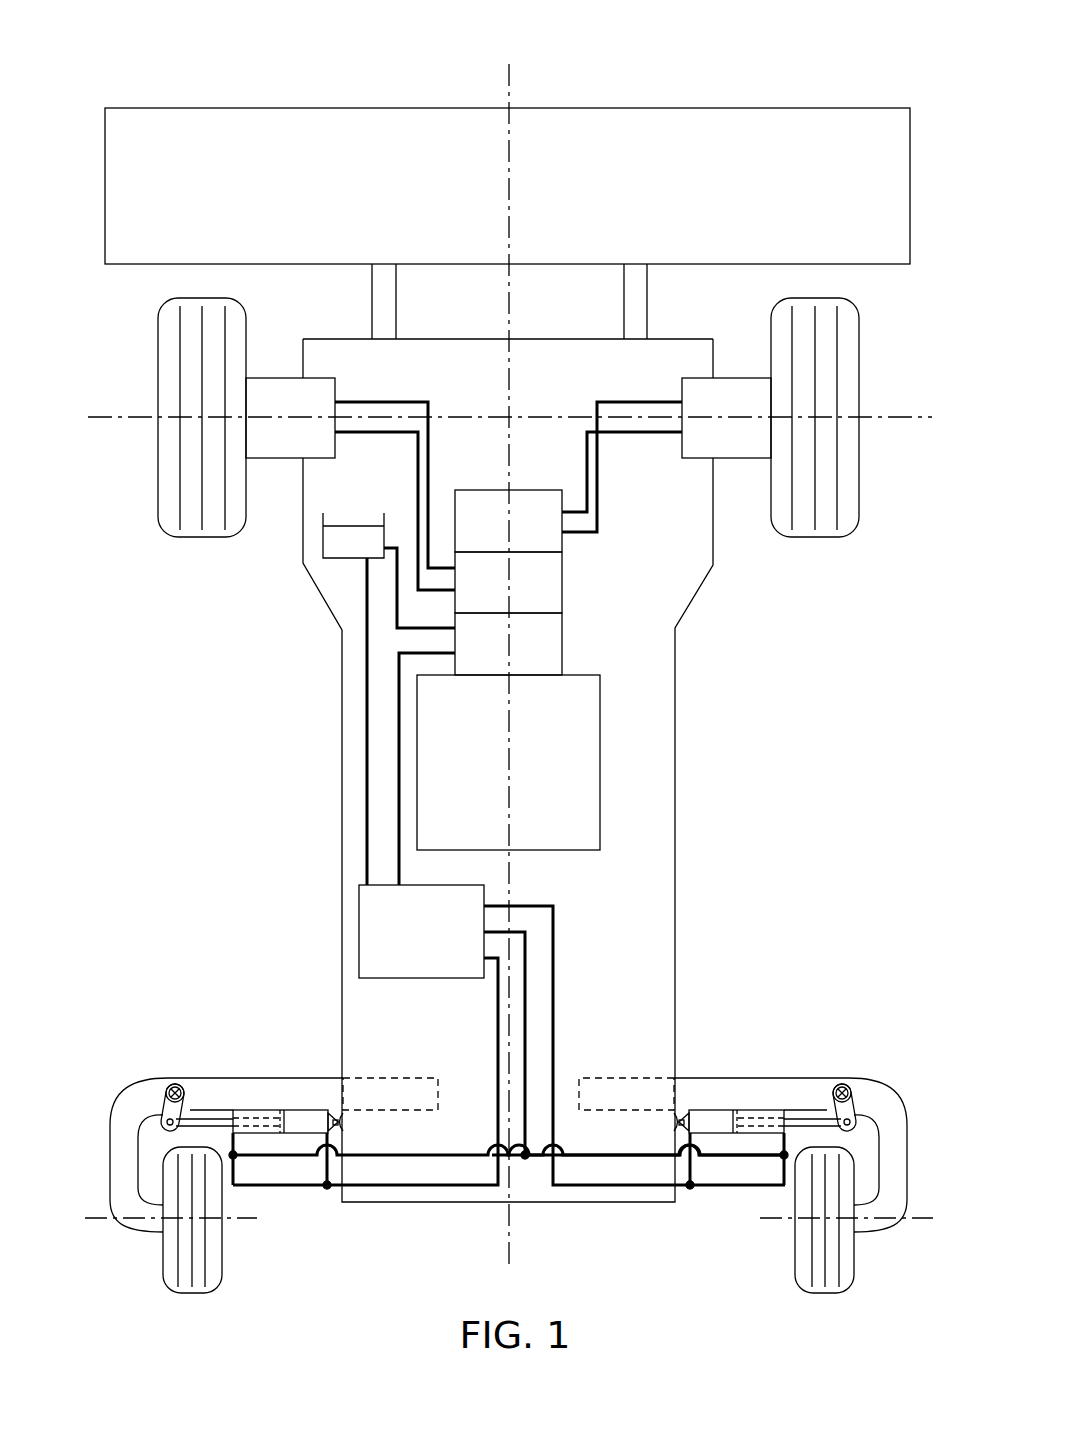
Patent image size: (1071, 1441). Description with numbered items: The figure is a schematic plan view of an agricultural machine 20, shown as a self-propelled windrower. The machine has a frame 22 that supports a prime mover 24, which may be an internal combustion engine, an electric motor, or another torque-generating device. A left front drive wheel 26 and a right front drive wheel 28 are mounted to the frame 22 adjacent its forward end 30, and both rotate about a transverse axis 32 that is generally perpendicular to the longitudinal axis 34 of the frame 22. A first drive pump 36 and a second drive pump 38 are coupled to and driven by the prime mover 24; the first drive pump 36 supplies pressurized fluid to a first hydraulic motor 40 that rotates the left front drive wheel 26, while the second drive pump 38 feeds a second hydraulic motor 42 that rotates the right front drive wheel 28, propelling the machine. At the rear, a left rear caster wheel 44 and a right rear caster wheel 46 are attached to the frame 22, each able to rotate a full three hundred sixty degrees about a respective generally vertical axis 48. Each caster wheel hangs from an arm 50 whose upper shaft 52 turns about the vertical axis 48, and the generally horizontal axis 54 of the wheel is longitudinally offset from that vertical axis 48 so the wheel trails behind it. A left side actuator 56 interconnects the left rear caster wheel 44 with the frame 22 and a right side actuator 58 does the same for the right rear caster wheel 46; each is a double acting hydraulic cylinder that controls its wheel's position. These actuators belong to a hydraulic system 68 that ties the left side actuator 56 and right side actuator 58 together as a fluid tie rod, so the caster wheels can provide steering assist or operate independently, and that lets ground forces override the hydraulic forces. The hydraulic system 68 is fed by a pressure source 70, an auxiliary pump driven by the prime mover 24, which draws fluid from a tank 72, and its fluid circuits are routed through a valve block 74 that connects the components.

The agricultural machine 20 is at (728, 55).
The frame 22 is at (675, 802).
The prime mover 24 is at (540, 772).
The left front drive wheel 26 is at (158, 372).
The right front drive wheel 28 is at (859, 375).
The forward end 30 is at (530, 338).
The transverse axis 32 is at (915, 420).
The longitudinal axis 34 is at (509, 195).
The first drive pump 36 is at (518, 596).
The second drive pump 38 is at (518, 536).
The first hydraulic motor 40 is at (273, 460).
The second hydraulic motor 42 is at (740, 458).
The left rear caster wheel 44 is at (167, 1283).
The right rear caster wheel 46 is at (853, 1285).
The generally vertical axis 48 is at (162, 1084).
The arm 50 is at (118, 1163).
The upper shaft 52 is at (184, 1085).
The generally horizontal axis 54 is at (100, 1220).
The left side actuator 56 is at (305, 1123).
The right side actuator 58 is at (713, 1123).
The hydraulic system 68 is at (586, 985).
The pressure source 70 is at (518, 658).
The tank 72 is at (337, 558).
The valve block 74 is at (403, 943).